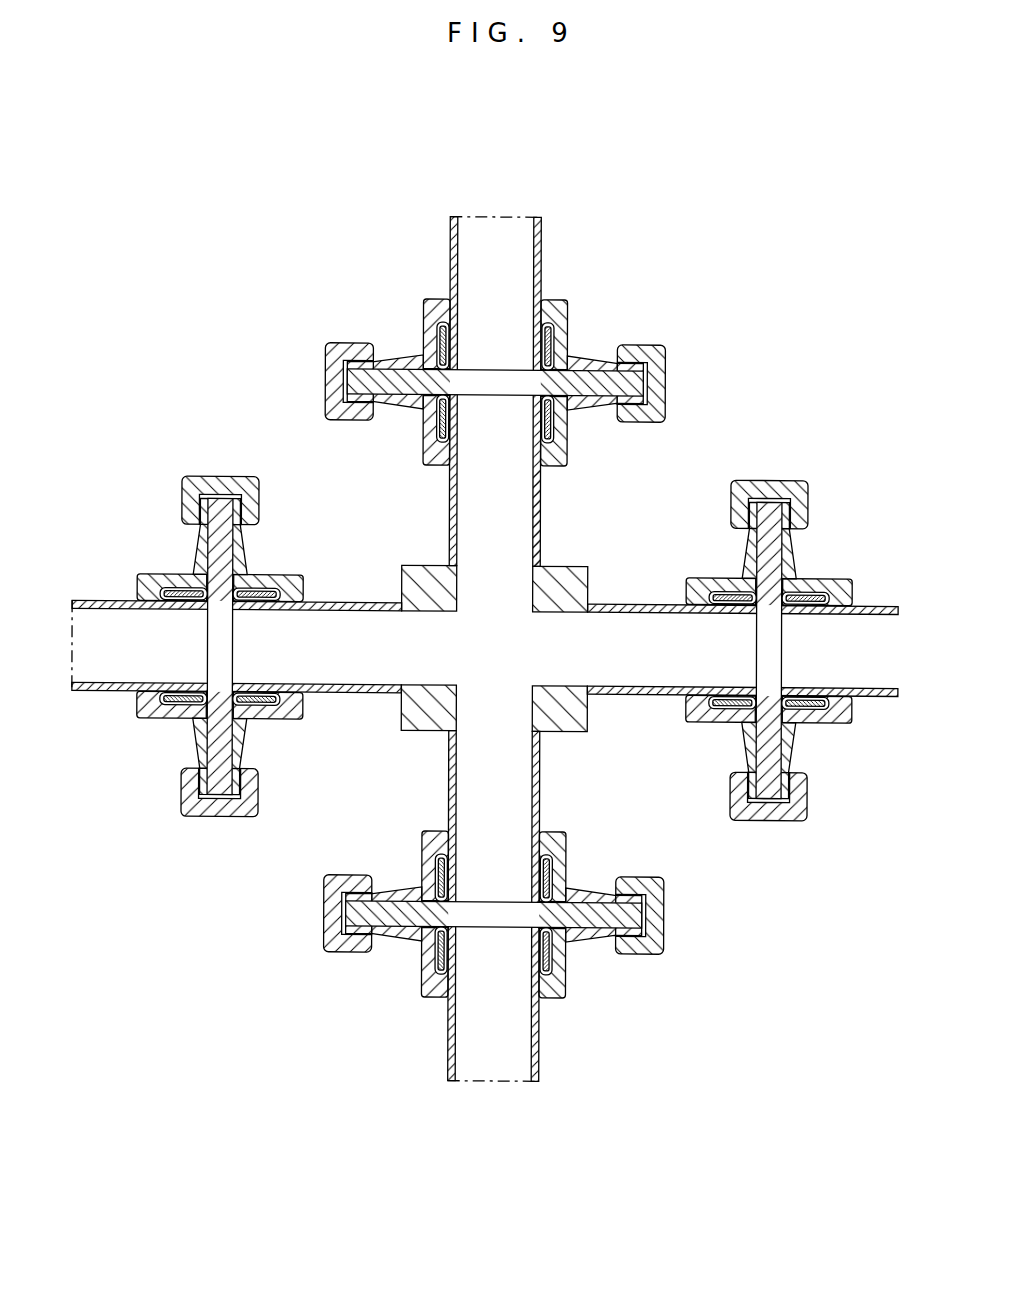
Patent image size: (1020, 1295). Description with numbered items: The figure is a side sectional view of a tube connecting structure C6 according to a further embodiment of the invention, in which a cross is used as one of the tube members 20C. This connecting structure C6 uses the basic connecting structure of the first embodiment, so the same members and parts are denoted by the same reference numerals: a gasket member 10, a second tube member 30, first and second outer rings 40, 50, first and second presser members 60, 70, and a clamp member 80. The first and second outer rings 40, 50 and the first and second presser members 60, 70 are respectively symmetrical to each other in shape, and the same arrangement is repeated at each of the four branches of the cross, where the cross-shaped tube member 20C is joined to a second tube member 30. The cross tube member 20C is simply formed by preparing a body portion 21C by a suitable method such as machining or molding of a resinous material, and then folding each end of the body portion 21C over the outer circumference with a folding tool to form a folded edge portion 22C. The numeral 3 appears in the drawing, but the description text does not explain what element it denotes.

The connecting structure C6 is at (227, 393).
The hollow shaft 3 is at (877, 693).
The second tube member 30 is at (450, 232).
The tube member 20C is at (587, 604).
The body portion 21C is at (540, 508).
The folded edge portion 22C is at (438, 417).
The first outer ring 40 is at (424, 455).
The second outer ring 50 is at (628, 284).
The first presser member 60 is at (570, 443).
The second presser member 70 is at (423, 310).
The clamp member 80 is at (325, 372).
The gasket member 10 is at (666, 410).